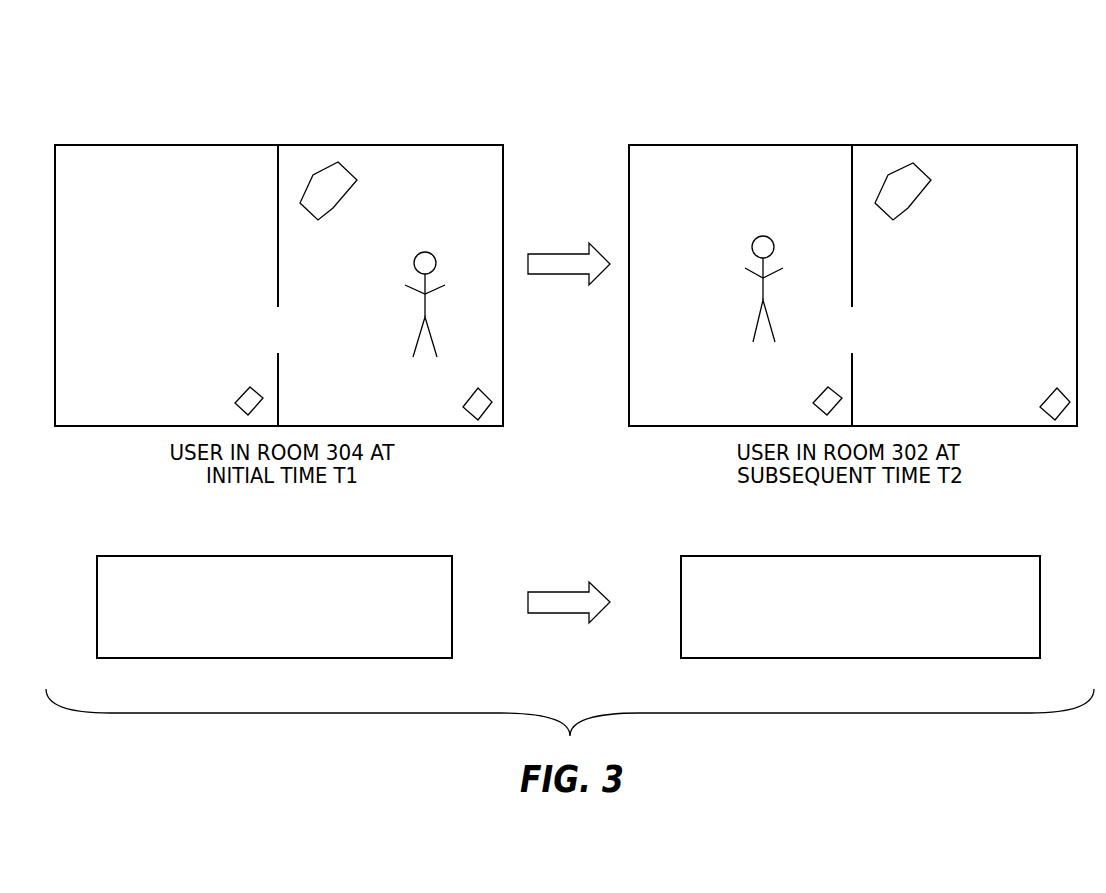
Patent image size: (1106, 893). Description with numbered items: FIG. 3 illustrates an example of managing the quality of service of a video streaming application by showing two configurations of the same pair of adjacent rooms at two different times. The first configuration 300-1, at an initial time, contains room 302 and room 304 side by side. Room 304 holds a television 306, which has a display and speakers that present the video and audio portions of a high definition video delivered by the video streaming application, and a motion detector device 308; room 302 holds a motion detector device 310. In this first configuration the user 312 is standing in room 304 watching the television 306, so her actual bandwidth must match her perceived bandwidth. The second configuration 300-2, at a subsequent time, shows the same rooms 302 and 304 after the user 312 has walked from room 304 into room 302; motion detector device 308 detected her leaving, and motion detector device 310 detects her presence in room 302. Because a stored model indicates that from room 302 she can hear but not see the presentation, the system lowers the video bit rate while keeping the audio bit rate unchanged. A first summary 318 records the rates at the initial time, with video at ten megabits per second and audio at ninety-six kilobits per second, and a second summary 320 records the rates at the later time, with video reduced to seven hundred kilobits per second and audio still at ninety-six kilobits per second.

The first configuration 300-1 is at (503, 90).
The second configuration 300-2 is at (1077, 90).
The room 302 is at (278, 138).
The room 304 is at (503, 138).
The television 306 is at (333, 208).
The motion detector device 308 is at (467, 398).
The motion detector device 310 is at (239, 395).
The user 312 is at (435, 267).
The first summary 318 is at (392, 556).
The second summary 320 is at (977, 556).